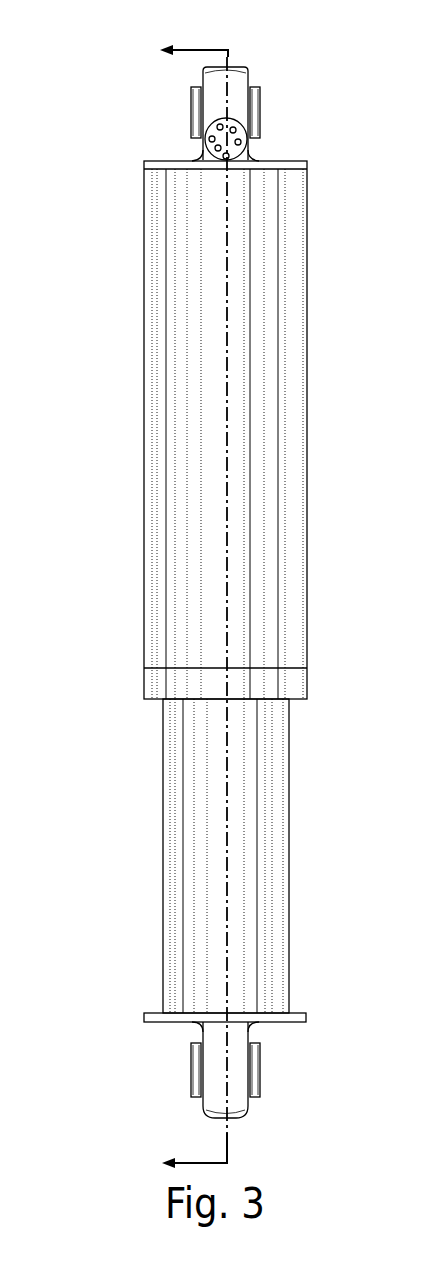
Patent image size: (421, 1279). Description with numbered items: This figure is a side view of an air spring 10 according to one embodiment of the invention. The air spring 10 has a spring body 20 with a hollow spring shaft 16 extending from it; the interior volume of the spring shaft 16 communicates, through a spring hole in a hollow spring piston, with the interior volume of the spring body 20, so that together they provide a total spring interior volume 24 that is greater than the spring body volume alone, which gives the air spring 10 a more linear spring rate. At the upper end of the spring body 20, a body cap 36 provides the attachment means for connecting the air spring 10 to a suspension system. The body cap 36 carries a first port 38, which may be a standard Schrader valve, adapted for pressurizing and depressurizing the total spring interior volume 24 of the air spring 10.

The air spring 10 is at (148, 37).
The hollow spring shaft 16 is at (178, 837).
The spring body 20 is at (170, 400).
The total spring interior volume 24 is at (420, 580).
The body cap 36 is at (237, 80).
The first port 38 is at (242, 119).